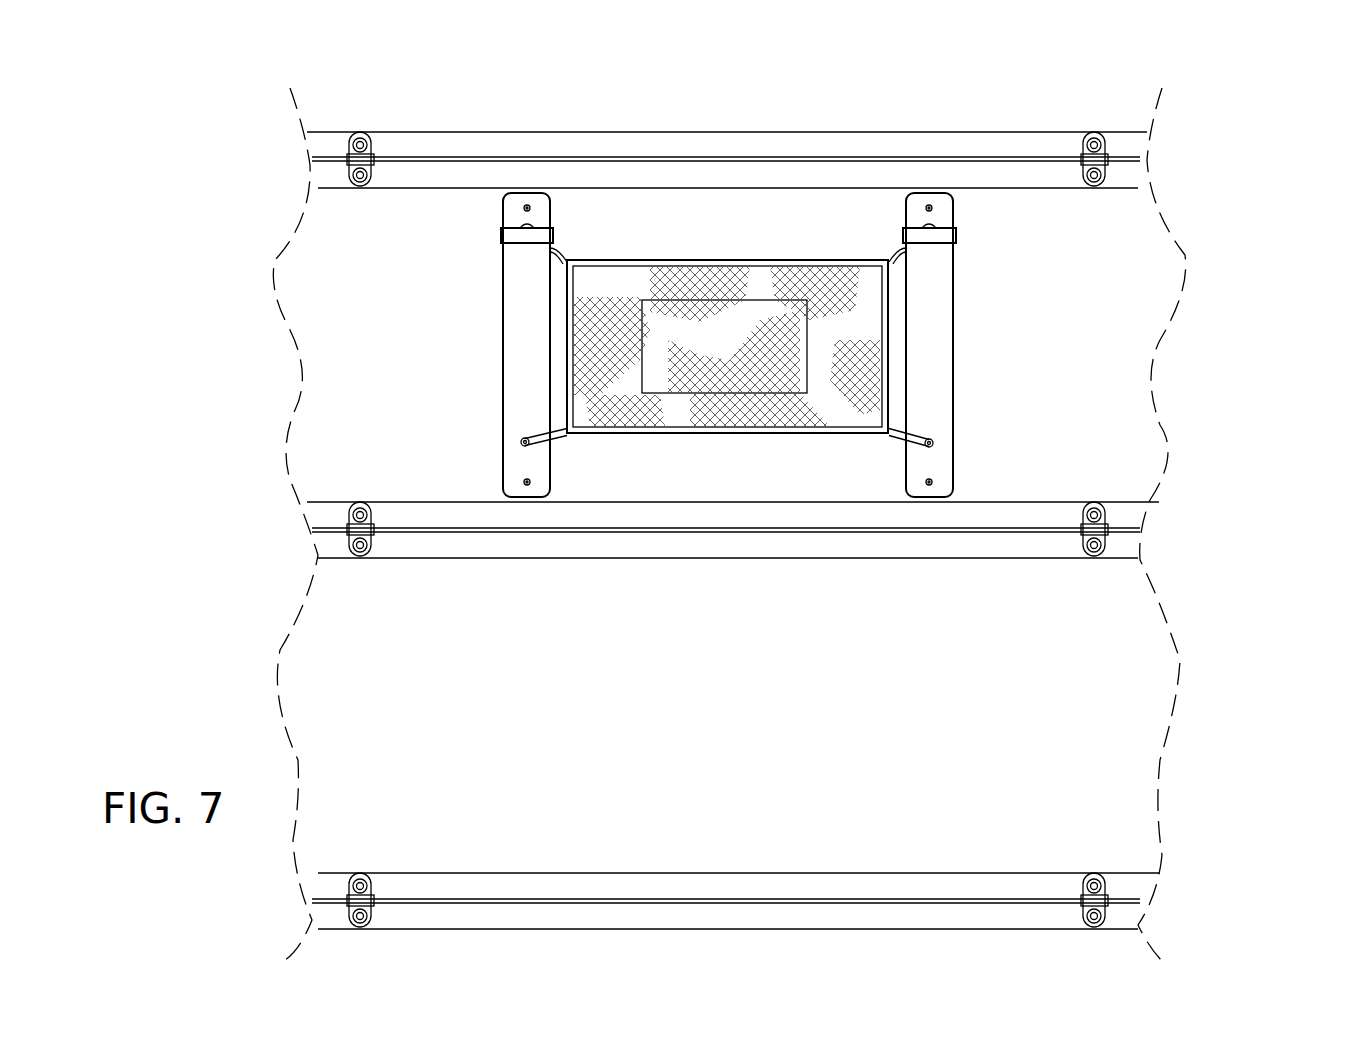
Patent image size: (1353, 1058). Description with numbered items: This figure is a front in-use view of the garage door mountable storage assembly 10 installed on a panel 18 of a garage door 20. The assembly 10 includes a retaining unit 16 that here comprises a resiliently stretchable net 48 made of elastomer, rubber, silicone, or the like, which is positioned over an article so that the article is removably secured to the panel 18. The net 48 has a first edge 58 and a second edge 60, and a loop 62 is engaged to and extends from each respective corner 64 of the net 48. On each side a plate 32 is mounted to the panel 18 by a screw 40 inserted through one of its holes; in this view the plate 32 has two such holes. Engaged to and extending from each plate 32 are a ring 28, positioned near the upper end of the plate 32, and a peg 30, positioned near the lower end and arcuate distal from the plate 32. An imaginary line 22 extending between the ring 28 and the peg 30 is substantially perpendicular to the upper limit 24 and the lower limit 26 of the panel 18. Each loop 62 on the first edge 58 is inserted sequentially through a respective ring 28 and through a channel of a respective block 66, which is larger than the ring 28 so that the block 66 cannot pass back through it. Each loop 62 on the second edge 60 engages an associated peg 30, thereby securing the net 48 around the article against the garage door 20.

The garage door mountable storage assembly 10 is at (1187, 150).
The retaining unit 16 is at (858, 338).
The panel 18 is at (1078, 472).
The garage door 20 is at (812, 132).
The imaginary line 22 is at (925, 287).
The upper limit 24 is at (686, 160).
The lower limit 26 is at (938, 533).
The ring 28 is at (505, 251).
The peg 30 is at (947, 442).
The plate 32 is at (928, 315).
The screw 40 is at (524, 201).
The net 48 is at (830, 292).
The first edge 58 is at (688, 258).
The second edge 60 is at (661, 430).
The loop 62 is at (922, 428).
The corner 64 is at (566, 425).
The block 66 is at (540, 233).